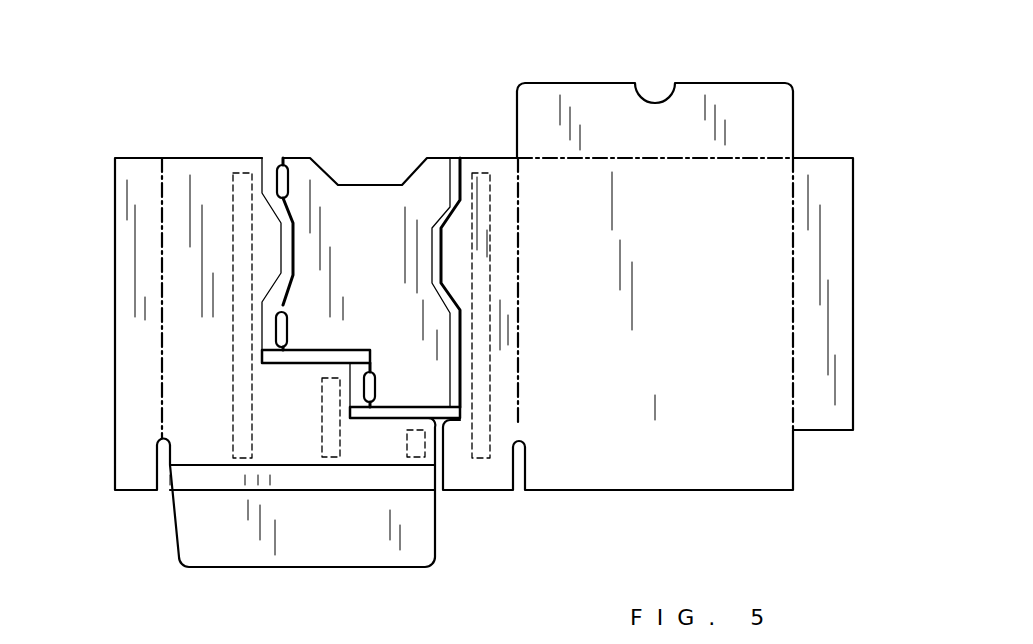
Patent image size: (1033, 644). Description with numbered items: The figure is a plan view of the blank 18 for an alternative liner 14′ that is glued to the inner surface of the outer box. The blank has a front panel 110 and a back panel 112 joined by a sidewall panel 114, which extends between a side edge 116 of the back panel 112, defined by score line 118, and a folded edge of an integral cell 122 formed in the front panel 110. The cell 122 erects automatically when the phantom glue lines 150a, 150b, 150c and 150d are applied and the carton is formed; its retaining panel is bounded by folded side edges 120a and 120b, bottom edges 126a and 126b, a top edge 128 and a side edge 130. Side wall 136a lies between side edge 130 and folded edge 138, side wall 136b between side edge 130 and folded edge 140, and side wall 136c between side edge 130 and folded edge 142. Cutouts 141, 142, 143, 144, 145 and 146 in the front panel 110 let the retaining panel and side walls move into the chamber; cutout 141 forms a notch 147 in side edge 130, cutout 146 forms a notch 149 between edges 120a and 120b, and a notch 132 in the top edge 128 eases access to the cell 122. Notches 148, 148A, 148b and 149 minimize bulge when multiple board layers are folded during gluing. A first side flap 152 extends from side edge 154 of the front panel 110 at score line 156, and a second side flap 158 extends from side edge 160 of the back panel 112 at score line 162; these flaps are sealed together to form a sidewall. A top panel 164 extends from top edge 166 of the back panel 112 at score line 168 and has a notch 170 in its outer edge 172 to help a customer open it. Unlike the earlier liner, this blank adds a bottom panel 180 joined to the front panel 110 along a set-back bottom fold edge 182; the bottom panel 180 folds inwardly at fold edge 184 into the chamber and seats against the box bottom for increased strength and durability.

The liner 14′ is at (138, 117).
The blank 18 is at (105, 291).
The front panel 110 is at (183, 257).
The back panel 112 is at (740, 432).
The sidewall panel 114 is at (500, 190).
The side edge 116 is at (518, 422).
The score line 118 is at (505, 263).
The folded side edge 120a is at (477, 173).
The folded side edge 120b is at (492, 336).
The cell 122 is at (390, 217).
The bottom edge 126a is at (342, 340).
The bottom edge 126b is at (427, 407).
The top edge 128 is at (437, 160).
The side edge 130 is at (285, 162).
The notch 132 is at (368, 183).
The side wall 136a is at (285, 165).
The side wall 136b is at (276, 322).
The side wall 136c is at (333, 458).
The folded edge 138 is at (252, 167).
The folded edge 140 is at (284, 182).
The cutout 141 is at (285, 255).
The cutout 142 is at (315, 310).
The cutout 143 is at (330, 355).
The cutout 144 is at (410, 375).
The cutout 145 is at (460, 413).
The cutout 146 is at (433, 247).
The notch 147 is at (294, 268).
The notch 148 is at (525, 468).
The notch 148A is at (443, 492).
The notch 148b is at (821, 488).
The notch 149 is at (165, 448).
The glue line 150a is at (233, 183).
The glue line 150b is at (322, 413).
The glue line 150c is at (425, 450).
The glue line 150d is at (490, 195).
The first side flap 152 is at (135, 170).
The side edge 154 is at (163, 183).
The score line 156 is at (160, 304).
The second side flap 158 is at (832, 268).
The side edge 160 is at (793, 217).
The score line 162 is at (793, 358).
The top panel 164 is at (578, 100).
The top edge 166 is at (760, 158).
The score line 168 is at (608, 158).
The notch 170 is at (653, 98).
The outer edge 172 is at (700, 83).
The bottom panel 180 is at (415, 537).
The bottom fold edge 182 is at (197, 490).
The fold edge 184 is at (205, 462).